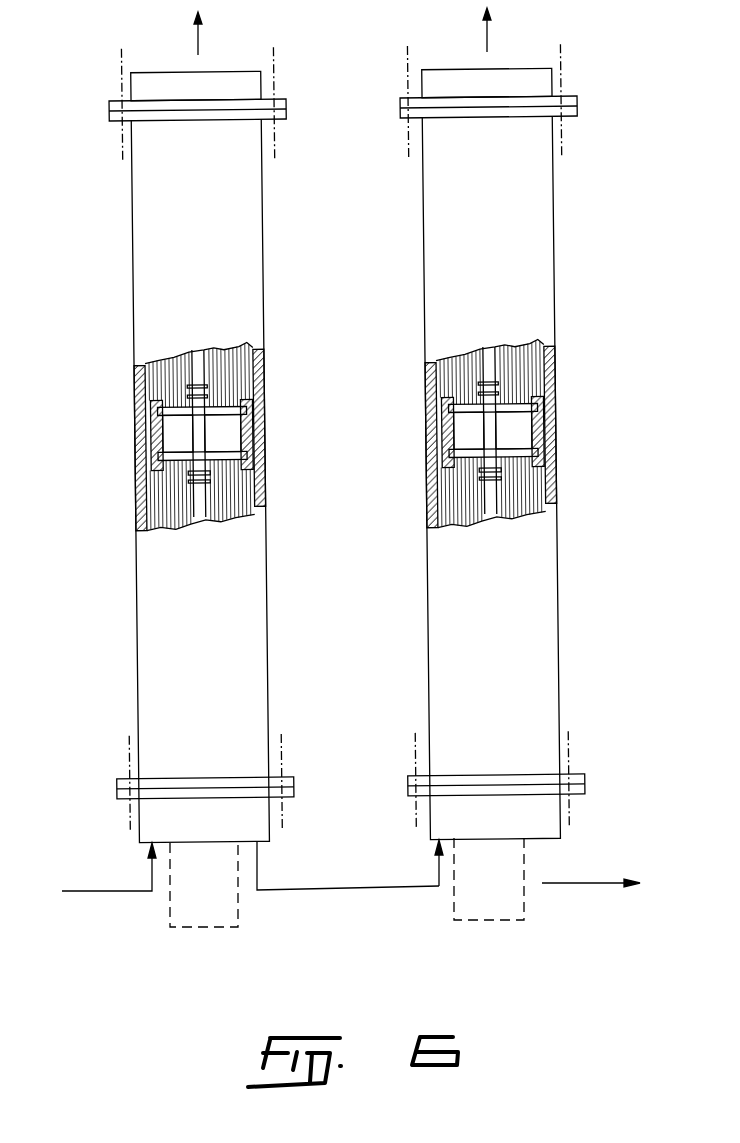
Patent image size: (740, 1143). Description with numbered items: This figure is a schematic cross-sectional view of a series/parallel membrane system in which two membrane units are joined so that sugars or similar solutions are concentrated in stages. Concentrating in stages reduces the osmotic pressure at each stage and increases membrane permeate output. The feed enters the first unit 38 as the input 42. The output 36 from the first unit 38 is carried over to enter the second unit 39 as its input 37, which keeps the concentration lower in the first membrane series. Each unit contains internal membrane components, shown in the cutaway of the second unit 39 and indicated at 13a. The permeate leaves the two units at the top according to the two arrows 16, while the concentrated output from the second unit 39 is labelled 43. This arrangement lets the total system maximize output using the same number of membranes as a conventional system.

The filter assembly 13a is at (485, 363).
The permeate arrows 16 is at (357, 30).
The output from the first unit 36 is at (348, 866).
The input to the second unit 37 is at (424, 863).
The first unit 38 is at (172, 575).
The second unit 39 is at (513, 573).
The input to the first unit 42 is at (92, 870).
The output from the second unit 43 is at (591, 874).